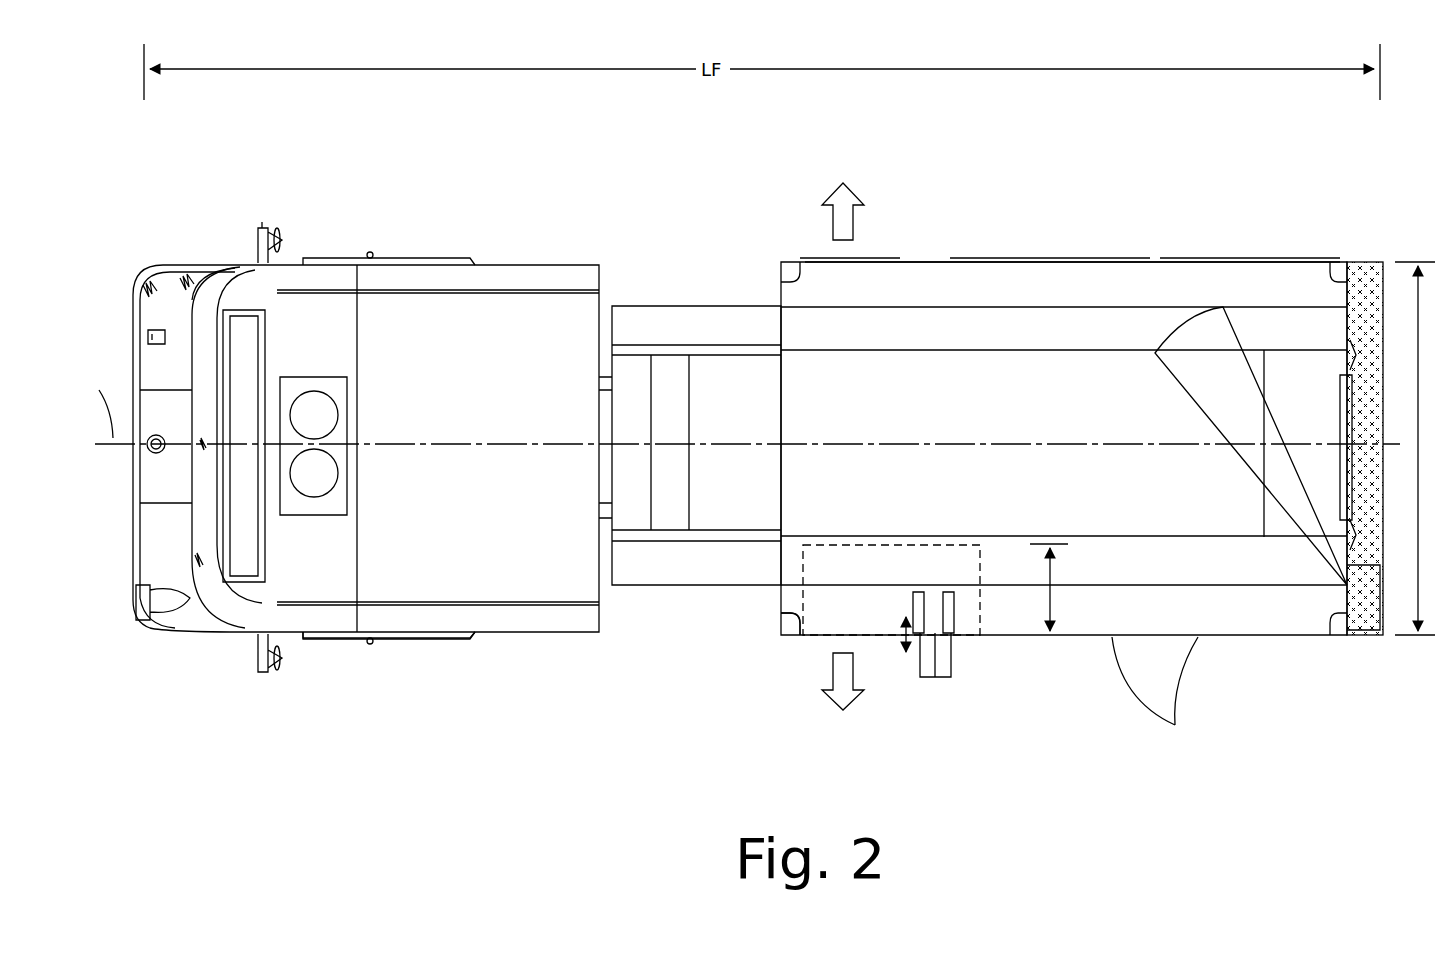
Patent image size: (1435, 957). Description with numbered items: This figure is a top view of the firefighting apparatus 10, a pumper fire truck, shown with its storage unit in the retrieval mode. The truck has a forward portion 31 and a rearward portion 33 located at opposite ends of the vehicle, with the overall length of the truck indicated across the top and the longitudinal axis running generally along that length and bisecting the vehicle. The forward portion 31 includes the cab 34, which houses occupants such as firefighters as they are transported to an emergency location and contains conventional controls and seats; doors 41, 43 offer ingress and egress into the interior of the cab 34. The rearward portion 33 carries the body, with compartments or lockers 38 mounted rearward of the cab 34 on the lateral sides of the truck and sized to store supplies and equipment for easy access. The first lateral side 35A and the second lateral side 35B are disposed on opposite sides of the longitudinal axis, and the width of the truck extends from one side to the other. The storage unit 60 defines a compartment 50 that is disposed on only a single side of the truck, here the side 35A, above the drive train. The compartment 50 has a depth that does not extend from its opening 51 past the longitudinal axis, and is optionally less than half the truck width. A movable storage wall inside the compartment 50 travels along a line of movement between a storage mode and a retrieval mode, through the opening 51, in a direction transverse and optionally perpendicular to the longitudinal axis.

The firefighting apparatus 10 is at (218, 180).
The forward portion 31 is at (363, 178).
The rearward portion 33 is at (1004, 188).
The cab 34 is at (228, 280).
The first lateral side 35A is at (843, 696).
The second lateral side 35B is at (843, 200).
The compartments or lockers 38 is at (1157, 691).
The door 41 is at (292, 652).
The door 43 is at (470, 644).
The compartment 50 is at (978, 554).
The opening 51 is at (877, 637).
The storage unit 60 is at (806, 645).